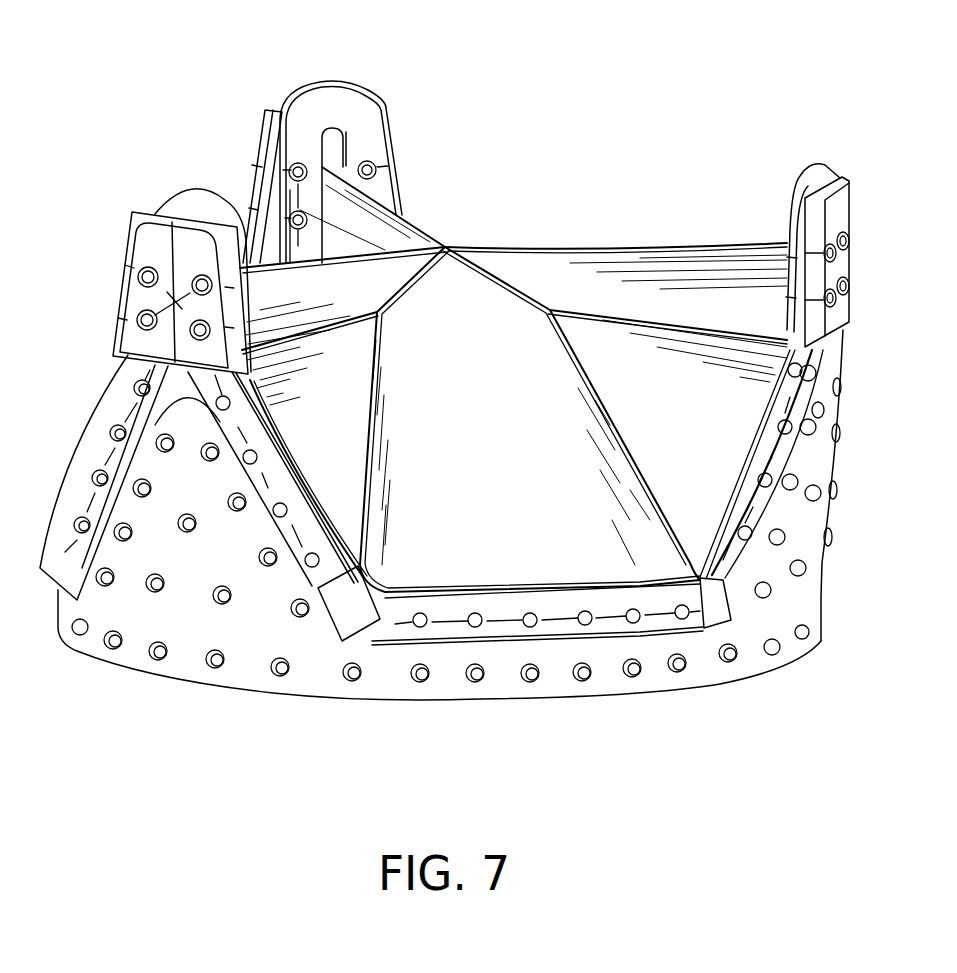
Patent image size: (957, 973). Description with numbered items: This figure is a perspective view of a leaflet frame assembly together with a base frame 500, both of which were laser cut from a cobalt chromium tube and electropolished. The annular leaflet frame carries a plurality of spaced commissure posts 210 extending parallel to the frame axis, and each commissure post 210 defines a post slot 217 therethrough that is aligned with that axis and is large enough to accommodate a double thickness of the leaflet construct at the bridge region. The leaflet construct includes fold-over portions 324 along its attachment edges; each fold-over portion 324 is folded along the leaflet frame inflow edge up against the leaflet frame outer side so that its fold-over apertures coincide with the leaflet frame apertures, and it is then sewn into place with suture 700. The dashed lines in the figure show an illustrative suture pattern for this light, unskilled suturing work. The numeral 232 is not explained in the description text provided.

The commissure post 210 is at (383, 107).
The post slot 217 is at (358, 133).
The strut 232 is at (365, 595).
The fold-over portion 324 is at (707, 605).
The base frame 500 is at (594, 694).
The suture 700 is at (457, 623).